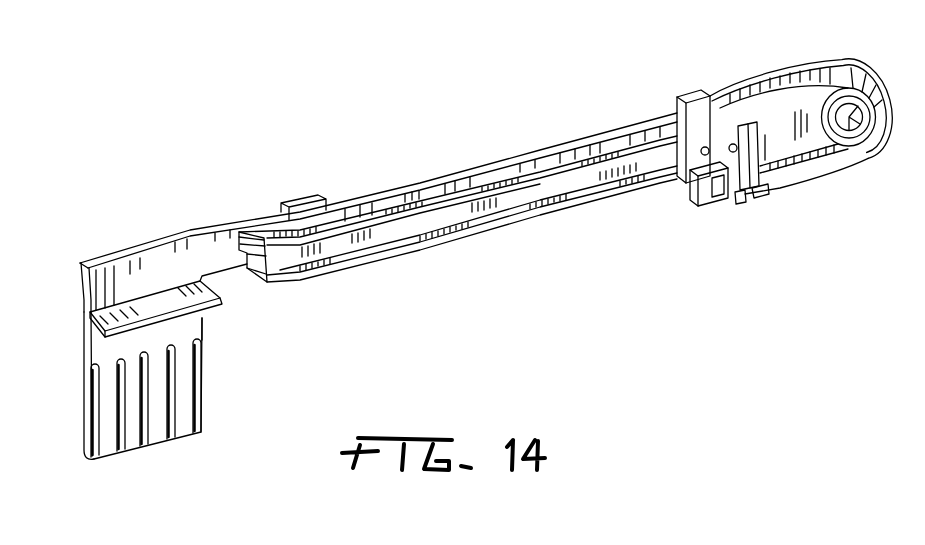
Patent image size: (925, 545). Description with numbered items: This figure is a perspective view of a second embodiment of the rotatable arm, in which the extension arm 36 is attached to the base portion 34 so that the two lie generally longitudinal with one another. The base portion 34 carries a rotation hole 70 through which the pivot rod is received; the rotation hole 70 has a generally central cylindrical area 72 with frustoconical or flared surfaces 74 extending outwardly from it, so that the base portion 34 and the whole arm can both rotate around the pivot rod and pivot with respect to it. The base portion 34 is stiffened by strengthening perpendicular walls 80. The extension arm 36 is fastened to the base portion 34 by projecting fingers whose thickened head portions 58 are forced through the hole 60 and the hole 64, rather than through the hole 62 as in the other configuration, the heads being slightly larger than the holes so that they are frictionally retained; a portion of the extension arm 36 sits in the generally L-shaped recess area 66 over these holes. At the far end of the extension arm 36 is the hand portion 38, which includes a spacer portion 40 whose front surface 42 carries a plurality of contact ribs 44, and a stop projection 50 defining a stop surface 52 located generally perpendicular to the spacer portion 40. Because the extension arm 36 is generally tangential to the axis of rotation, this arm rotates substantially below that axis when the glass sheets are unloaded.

The base portion 34 is at (825, 176).
The extension arm 36 is at (420, 186).
The hand portion 38 is at (122, 272).
The spacer portion 40 is at (82, 345).
The front surface 42 is at (110, 432).
The contact ribs 44 is at (120, 391).
The stop projection 50 is at (215, 290).
The stop surface 52 is at (206, 320).
The thickened head portions 58 is at (703, 147).
The hole 60 is at (737, 152).
The hole 62 is at (741, 204).
The hole 64 is at (692, 184).
The recess area 66 is at (766, 195).
The rotation hole 70 is at (865, 85).
The central cylindrical area 72 is at (850, 147).
The flared surfaces 74 is at (880, 136).
The strengthening perpendicular walls 80 is at (778, 72).